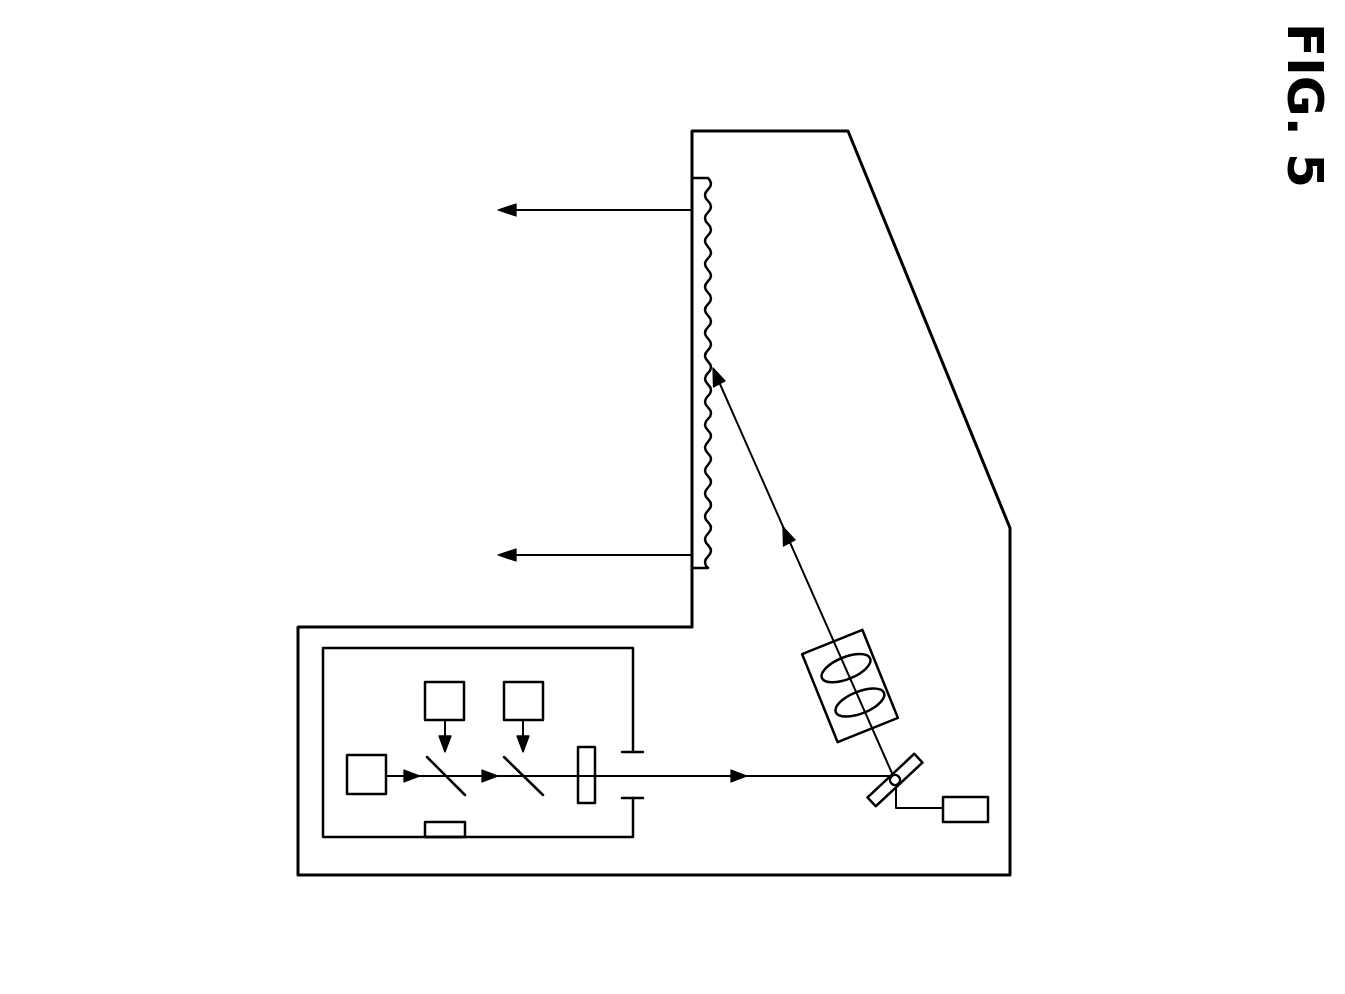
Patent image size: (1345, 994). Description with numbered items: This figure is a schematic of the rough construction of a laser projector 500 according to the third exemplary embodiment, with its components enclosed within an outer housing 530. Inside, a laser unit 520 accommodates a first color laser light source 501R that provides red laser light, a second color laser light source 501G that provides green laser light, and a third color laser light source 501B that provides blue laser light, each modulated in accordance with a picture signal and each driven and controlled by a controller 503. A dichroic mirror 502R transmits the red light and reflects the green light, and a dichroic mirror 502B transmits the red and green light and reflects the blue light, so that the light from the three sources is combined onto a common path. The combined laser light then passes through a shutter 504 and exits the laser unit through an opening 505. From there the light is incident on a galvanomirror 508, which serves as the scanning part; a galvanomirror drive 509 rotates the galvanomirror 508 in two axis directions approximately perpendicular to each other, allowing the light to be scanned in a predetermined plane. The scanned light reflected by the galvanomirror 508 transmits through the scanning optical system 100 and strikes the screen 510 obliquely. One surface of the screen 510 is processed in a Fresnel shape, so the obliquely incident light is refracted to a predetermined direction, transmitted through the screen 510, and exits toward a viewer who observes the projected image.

The laser projector 500 is at (752, 117).
The housing 530 is at (818, 130).
The screen 510 is at (691, 388).
The laser unit 520 is at (343, 837).
The first color laser light source 501R is at (347, 776).
The second color laser light source 501G is at (445, 682).
The third color laser light source 501B is at (523, 682).
The dichroic mirror 502R is at (447, 778).
The dichroic mirror 502B is at (527, 778).
The controller 503 is at (445, 838).
The shutter 504 is at (585, 804).
The opening 505 is at (637, 748).
The scanning optical system 100 is at (898, 690).
The galvanomirror 508 is at (920, 762).
The galvanomirror drive 509 is at (965, 822).